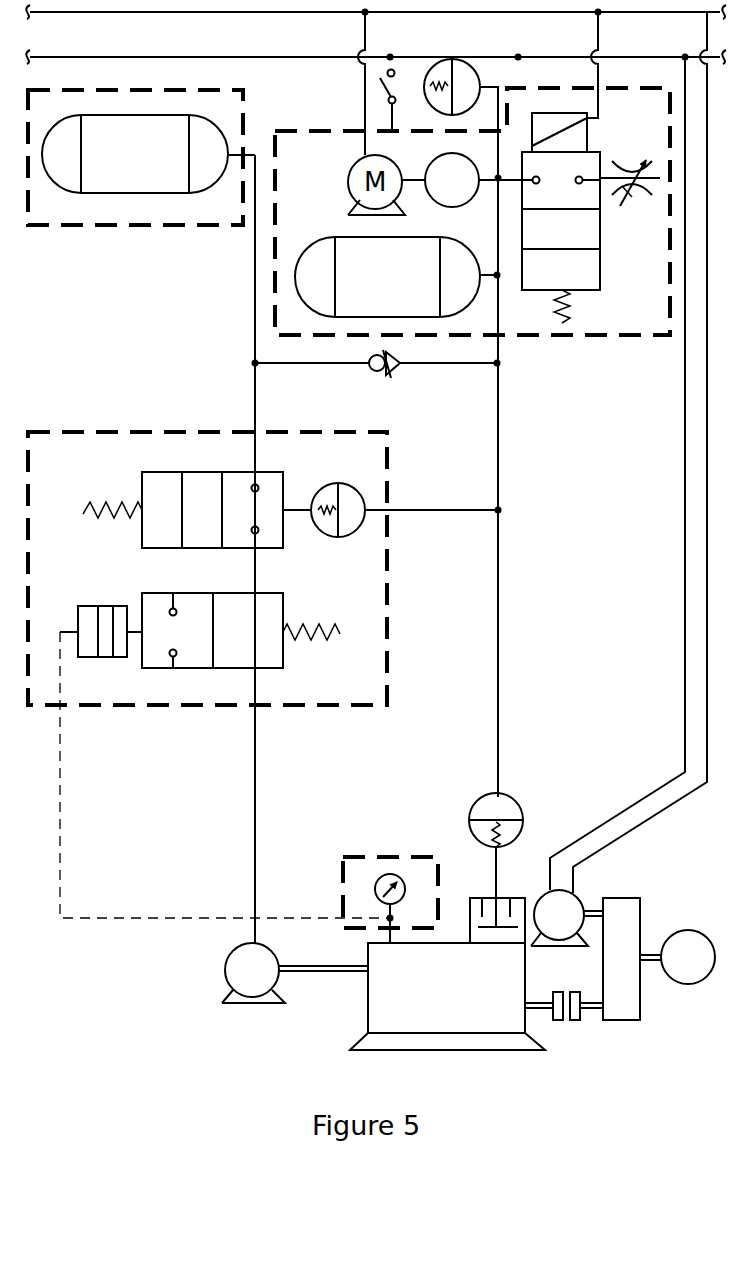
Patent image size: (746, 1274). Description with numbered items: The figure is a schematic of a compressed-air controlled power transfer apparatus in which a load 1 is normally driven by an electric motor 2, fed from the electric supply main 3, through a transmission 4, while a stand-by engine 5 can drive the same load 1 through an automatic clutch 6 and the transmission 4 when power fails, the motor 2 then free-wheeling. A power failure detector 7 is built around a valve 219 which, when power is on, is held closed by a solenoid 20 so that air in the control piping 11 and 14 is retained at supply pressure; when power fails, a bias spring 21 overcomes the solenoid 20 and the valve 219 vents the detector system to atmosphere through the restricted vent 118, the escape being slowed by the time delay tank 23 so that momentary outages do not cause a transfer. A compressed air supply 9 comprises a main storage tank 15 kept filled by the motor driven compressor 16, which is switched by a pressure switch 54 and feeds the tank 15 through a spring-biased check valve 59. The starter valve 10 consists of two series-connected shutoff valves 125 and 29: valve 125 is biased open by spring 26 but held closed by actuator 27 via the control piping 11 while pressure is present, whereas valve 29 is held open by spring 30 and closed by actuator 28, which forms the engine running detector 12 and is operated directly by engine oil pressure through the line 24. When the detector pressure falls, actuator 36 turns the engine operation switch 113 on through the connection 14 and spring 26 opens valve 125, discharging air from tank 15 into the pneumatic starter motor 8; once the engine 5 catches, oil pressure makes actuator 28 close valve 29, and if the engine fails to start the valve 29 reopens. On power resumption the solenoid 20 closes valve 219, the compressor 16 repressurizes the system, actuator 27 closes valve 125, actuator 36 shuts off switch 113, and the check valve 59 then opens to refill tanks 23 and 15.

The load 1 is at (689, 931).
The motor 2 is at (580, 894).
The electric supply main 3 is at (664, 14).
The transmission 4 is at (644, 915).
The stand-by engine 5 is at (366, 1024).
The clutch 6 is at (568, 1022).
The power failure detector 7 is at (606, 341).
The pneumatic starter motor 8 is at (223, 970).
The compressed air supply 9 is at (146, 229).
The starter valve 10 is at (100, 431).
The operative connection 11 is at (420, 509).
The engine running detector 12 is at (395, 856).
The operative connection 14 is at (501, 566).
The storage tank 15 is at (163, 193).
The air compressor 16 is at (462, 203).
The solenoid 20 is at (590, 132).
The bias spring 21 is at (578, 306).
The second storage tank 23 is at (458, 314).
The line 24 is at (62, 885).
The spring bias 26 is at (110, 500).
The actuator 27 is at (345, 487).
The actuator 28 is at (106, 605).
The shutoff valve 29 is at (287, 665).
The spring bias 30 is at (298, 620).
The spring-biased actuator 36 is at (513, 804).
The pressure switch 54 is at (432, 106).
The spring-biased check valve 59 is at (392, 372).
The engine operation switch 113 is at (506, 898).
The restricted vent 118 is at (630, 194).
The shutoff valve 125 is at (278, 471).
The valve 219 is at (602, 262).